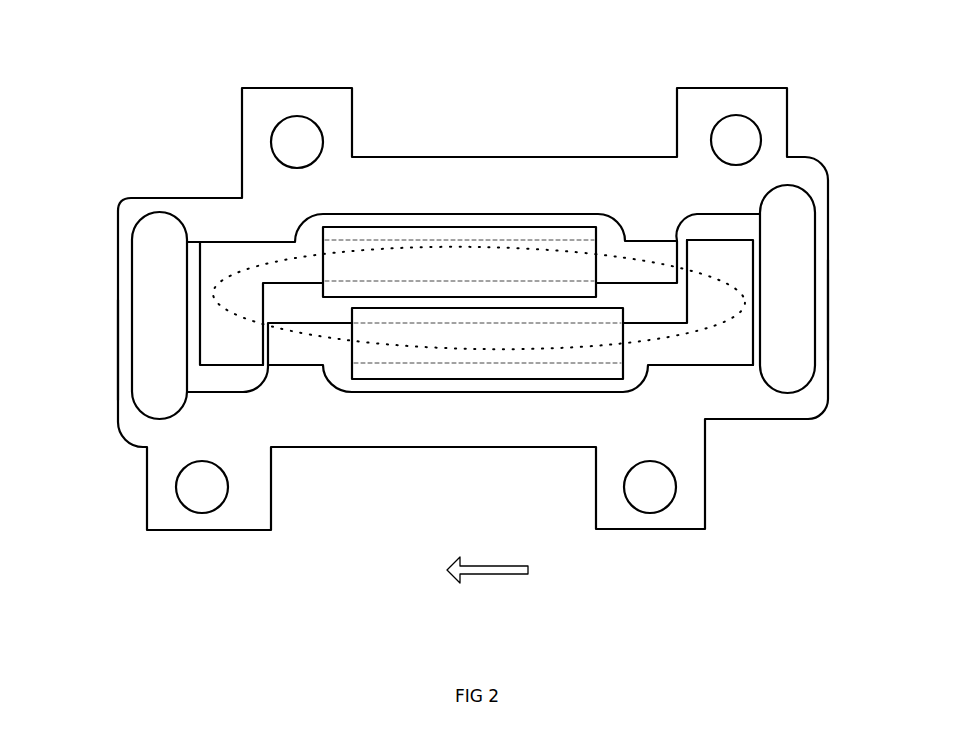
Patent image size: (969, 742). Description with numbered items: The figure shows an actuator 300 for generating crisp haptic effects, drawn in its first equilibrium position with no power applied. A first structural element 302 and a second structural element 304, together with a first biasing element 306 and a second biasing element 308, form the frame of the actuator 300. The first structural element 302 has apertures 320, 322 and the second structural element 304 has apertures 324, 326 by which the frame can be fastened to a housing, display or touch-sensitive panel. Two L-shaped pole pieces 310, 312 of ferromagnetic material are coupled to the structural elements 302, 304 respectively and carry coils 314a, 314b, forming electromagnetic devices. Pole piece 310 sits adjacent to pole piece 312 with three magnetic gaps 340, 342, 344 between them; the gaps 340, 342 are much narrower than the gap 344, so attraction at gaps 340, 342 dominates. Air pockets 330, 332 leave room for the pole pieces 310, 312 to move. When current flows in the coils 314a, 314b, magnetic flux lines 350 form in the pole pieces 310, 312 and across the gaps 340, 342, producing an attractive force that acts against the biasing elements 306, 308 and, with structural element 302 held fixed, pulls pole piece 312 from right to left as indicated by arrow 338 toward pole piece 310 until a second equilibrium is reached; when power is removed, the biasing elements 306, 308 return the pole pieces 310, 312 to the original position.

The actuator 300 is at (131, 118).
The first structural element 302 is at (489, 183).
The second structural element 304 is at (485, 416).
The first biasing element 306 is at (124, 350).
The second biasing element 308 is at (829, 307).
The first L-shaped pole piece 310 is at (667, 238).
The second L-shaped pole piece 312 is at (685, 350).
The first coil 314a is at (534, 264).
The second coil 314b is at (423, 381).
The aperture 320 is at (280, 136).
The aperture 322 is at (734, 116).
The aperture 324 is at (200, 505).
The aperture 326 is at (658, 498).
The air pocket 330 is at (156, 252).
The air pocket 332 is at (781, 208).
The arrow 338 is at (472, 582).
The magnetic gap 340 is at (260, 351).
The magnetic gap 342 is at (690, 251).
The magnetic gap 344 is at (407, 296).
The magnetic flux lines 350 is at (732, 319).